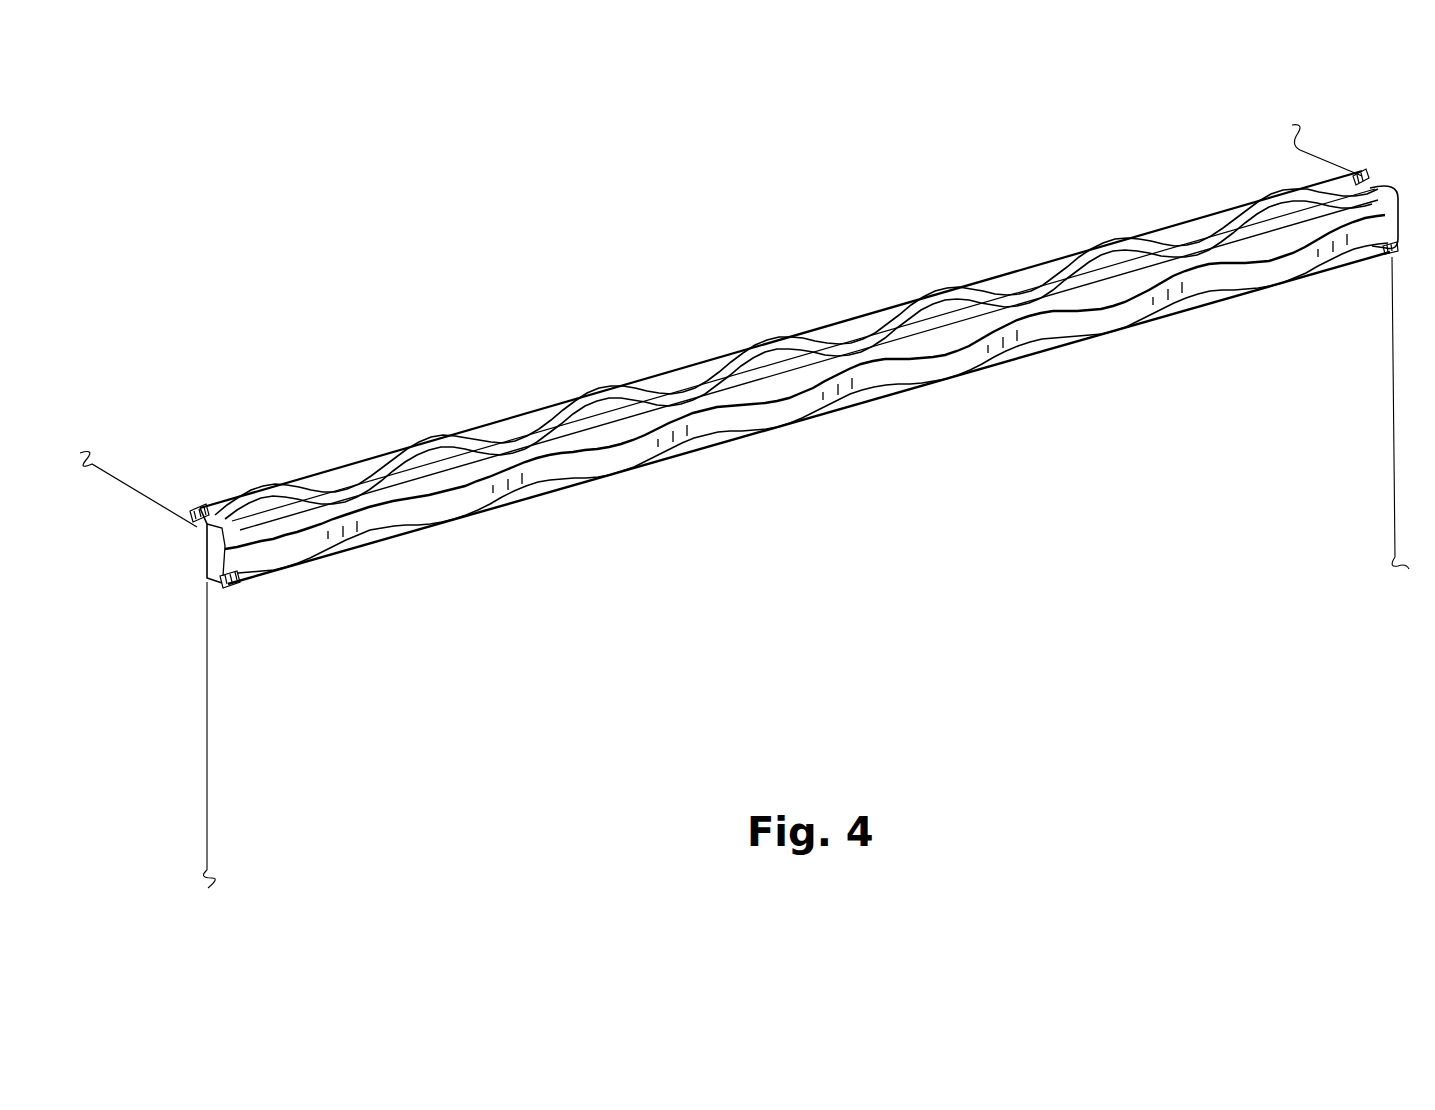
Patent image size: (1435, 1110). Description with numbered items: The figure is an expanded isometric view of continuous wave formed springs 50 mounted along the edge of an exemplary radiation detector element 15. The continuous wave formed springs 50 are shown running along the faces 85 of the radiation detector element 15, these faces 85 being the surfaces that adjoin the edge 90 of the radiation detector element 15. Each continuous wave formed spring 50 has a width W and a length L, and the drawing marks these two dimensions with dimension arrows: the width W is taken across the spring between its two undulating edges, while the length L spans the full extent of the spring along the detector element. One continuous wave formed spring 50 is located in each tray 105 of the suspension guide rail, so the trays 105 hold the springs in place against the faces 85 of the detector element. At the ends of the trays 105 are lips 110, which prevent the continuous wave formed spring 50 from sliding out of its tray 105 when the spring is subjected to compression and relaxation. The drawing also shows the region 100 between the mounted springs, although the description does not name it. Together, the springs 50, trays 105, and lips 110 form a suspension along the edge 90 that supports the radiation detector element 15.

The radiation detector element 15 is at (802, 613).
The continuous wave formed spring 50 is at (455, 437).
The faces 85 is at (567, 391).
The edge 90 is at (203, 548).
The channel 100 is at (390, 490).
The tray 105 is at (197, 535).
The lips 110 is at (208, 500).
The width W is at (302, 578).
The length L is at (1392, 293).